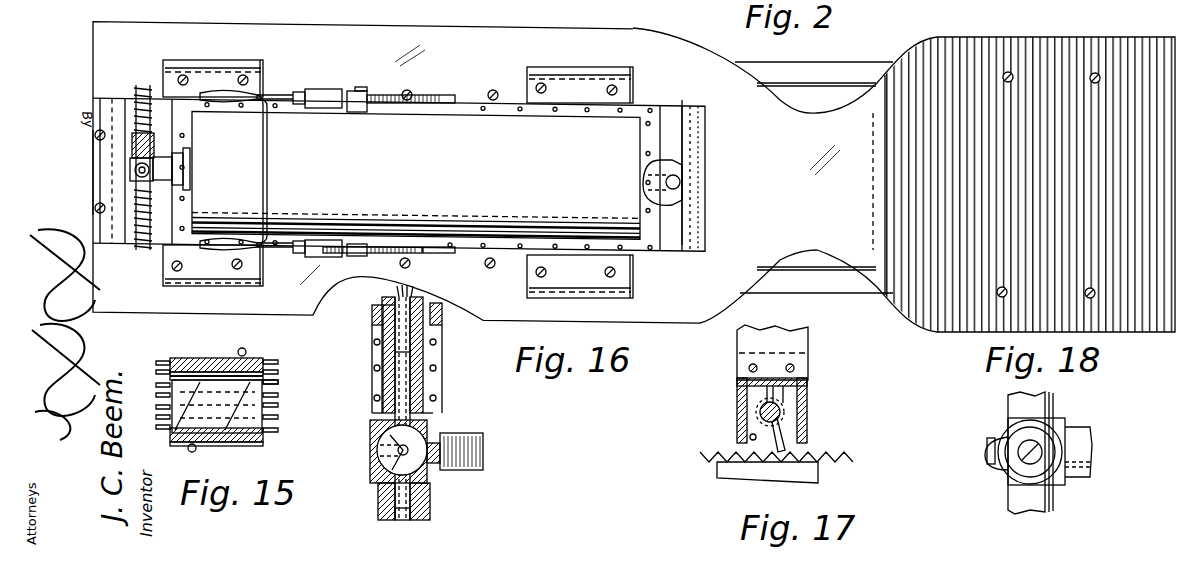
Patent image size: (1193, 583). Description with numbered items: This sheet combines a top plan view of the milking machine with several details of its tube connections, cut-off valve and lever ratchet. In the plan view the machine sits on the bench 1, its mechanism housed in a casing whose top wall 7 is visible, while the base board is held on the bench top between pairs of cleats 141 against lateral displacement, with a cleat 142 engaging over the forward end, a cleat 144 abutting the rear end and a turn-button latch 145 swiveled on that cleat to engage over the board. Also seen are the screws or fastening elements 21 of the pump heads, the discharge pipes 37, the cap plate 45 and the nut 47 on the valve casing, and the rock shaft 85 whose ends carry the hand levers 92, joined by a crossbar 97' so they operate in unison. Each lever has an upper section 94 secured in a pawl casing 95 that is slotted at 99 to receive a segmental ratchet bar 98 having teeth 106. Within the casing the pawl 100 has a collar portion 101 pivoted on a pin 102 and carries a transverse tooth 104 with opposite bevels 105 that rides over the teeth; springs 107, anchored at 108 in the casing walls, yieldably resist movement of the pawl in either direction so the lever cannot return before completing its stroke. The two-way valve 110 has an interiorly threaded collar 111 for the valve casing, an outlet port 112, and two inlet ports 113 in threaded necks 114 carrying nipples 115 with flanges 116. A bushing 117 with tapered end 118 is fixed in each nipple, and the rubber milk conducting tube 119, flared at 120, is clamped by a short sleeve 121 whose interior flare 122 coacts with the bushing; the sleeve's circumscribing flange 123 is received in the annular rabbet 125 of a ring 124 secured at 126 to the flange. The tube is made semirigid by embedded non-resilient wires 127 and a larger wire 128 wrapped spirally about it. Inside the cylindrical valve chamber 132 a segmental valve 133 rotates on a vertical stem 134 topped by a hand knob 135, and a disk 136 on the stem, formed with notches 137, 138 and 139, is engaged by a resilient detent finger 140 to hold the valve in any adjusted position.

In FIG. 2, the bench 1 is at (573, 43).
In FIG. 2, the top wall 7 is at (416, 176).
In FIG. 2, the screws or fastening elements 21 is at (828, 247).
In FIG. 2, the pipes 37 is at (957, 6).
In FIG. 2, the cap plate 45 is at (1033, 6).
In FIG. 2, the nut 47 is at (187, 173).
In FIG. 2, the rock shaft 85 is at (358, 90).
In FIG. 2, the hand levers 92 is at (287, 102).
In FIG. 17, the upper section 94 is at (793, 342).
In FIG. 2, the pawl casing 95 is at (318, 101).
In FIG. 17, the pawl casing 95 is at (790, 408).
In FIG. 2, the crossbar 97' is at (280, 171).
In FIG. 2, the segmental ratchet bar 98 is at (393, 250).
In FIG. 17, the segmental ratchet bar 98 is at (823, 473).
In FIG. 17, the slots 99 is at (805, 445).
In FIG. 17, the pawl 100 is at (765, 427).
In FIG. 17, the collar portion 101 is at (757, 409).
In FIG. 17, the pin 102 is at (792, 410).
In FIG. 17, the transverse tooth 104 is at (747, 453).
In FIG. 17, the bevels 105 is at (777, 457).
In FIG. 2, the ratchet teeth 106 is at (413, 254).
In FIG. 17, the ratchet teeth 106 is at (840, 458).
In FIG. 17, the springs 107 is at (797, 417).
In FIG. 17, the spring anchor 108 is at (738, 388).
In FIG. 2, the two-way valve 110 is at (167, 163).
In FIG. 16, the two-way valve 110 is at (430, 481).
In FIG. 16, the interiorly threaded collar 111 is at (462, 433).
In FIG. 16, the outlet port 112 is at (433, 416).
In FIG. 16, the inlet ports 113 is at (430, 358).
In FIG. 16, the exteriorly threaded necks 114 is at (380, 400).
In FIG. 16, the nipple 115 is at (437, 377).
In FIG. 16, the flange 116 is at (375, 373).
In FIG. 16, the bushing 117 is at (367, 400).
In FIG. 16, the tapered end 118 is at (385, 381).
In FIG. 15, the rubber milk conducting tube 119 is at (208, 362).
In FIG. 16, the rubber milk conducting tube 119 is at (383, 309).
In FIG. 16, the flared end 120 is at (390, 366).
In FIG. 16, the short sleeve 121 is at (440, 335).
In FIG. 16, the interior flare 122 is at (437, 330).
In FIG. 16, the circumscribing flange 123 is at (395, 352).
In FIG. 16, the ring 124 is at (380, 308).
In FIG. 16, the annular rabbet 125 is at (375, 312).
In FIG. 16, the bolts or fastening 126 is at (439, 315).
In FIG. 15, the non-resilient wires 127 is at (265, 380).
In FIG. 2, the larger wire 128 is at (137, 117).
In FIG. 15, the larger wire 128 is at (244, 352).
In FIG. 16, the valve chamber 132 is at (380, 484).
In FIG. 16, the valve 133 is at (378, 451).
In FIG. 16, the valve stem 134 is at (377, 427).
In FIG. 18, the hand knob 135 is at (1045, 433).
In FIG. 18, the disk 136 is at (1067, 477).
In FIG. 18, the notch 137 is at (1008, 425).
In FIG. 18, the notch 138 is at (1000, 463).
In FIG. 18, the notch 139 is at (1008, 477).
In FIG. 2, the resilient detent finger 140 is at (130, 172).
In FIG. 18, the resilient detent finger 140 is at (985, 448).
In FIG. 2, the cleats 141 is at (197, 83).
In FIG. 2, the cleat 142 is at (98, 165).
In FIG. 2, the cleat 144 is at (682, 224).
In FIG. 2, the turn-button latch 145 is at (682, 168).